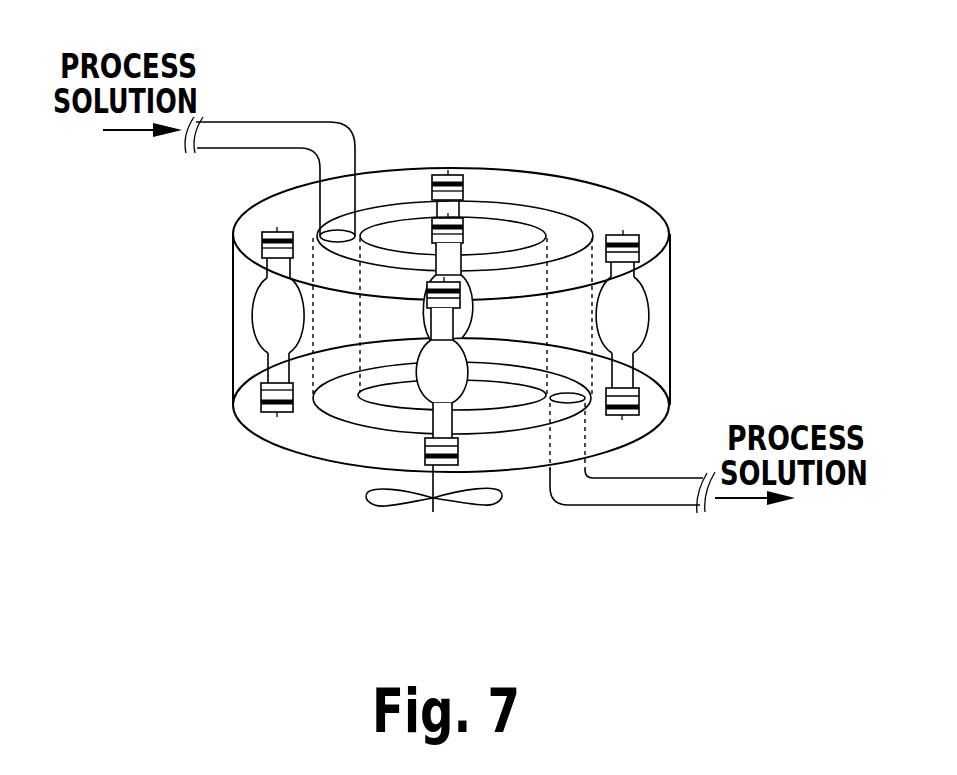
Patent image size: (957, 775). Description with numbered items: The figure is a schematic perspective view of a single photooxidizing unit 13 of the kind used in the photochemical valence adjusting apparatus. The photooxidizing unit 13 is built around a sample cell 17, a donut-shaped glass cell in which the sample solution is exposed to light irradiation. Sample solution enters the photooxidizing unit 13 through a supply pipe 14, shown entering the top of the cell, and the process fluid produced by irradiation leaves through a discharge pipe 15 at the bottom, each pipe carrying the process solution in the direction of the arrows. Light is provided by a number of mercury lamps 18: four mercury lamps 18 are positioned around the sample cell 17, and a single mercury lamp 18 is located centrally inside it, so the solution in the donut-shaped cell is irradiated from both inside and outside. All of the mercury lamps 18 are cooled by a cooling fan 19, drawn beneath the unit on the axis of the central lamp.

The photooxidizing unit 13 is at (765, 236).
The supply pipe 14 is at (213, 130).
The discharge pipe 15 is at (630, 493).
The sample cell 17 is at (352, 254).
The mercury lamp 18 is at (268, 390).
The cooling fan 19 is at (490, 500).